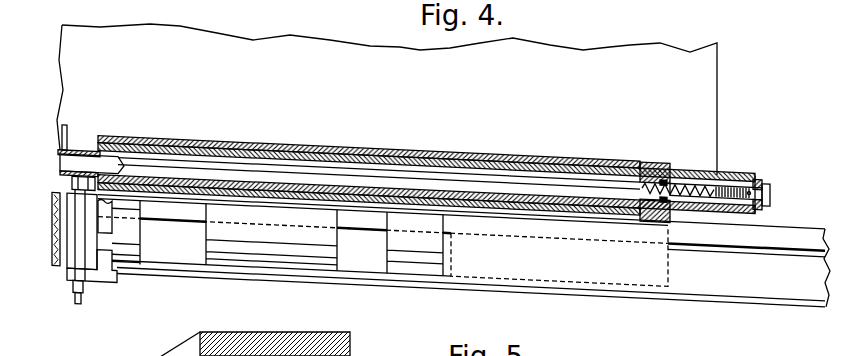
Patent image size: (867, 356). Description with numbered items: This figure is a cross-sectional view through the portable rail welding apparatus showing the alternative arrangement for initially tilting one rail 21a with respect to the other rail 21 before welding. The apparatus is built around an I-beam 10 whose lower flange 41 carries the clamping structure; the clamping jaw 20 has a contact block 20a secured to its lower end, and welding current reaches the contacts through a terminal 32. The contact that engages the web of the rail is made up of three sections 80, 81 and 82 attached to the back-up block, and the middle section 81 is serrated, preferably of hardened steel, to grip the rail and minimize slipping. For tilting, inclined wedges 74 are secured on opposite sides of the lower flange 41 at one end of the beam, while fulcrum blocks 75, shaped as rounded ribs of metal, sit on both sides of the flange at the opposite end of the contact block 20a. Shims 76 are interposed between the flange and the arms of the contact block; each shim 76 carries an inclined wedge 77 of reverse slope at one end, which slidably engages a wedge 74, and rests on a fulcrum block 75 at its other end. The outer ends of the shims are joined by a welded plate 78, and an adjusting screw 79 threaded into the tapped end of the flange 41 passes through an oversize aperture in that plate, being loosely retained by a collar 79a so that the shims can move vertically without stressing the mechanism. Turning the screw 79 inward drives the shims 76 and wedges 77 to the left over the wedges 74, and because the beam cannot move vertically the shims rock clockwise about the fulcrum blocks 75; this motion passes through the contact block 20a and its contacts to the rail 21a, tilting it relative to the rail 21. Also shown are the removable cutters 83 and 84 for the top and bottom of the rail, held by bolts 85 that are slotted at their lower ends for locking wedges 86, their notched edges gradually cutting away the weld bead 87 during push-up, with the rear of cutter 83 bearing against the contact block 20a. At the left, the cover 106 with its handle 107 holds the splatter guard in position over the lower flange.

The I-beam 10 is at (713, 97).
The contact block 20a is at (300, 147).
The lower flange 41 is at (543, 182).
The fulcrum block 75 is at (100, 166).
The shim 76 is at (397, 197).
The inclined wedge 77 is at (635, 170).
The inclined wedge 74 is at (651, 178).
The plate 78 is at (758, 178).
The adjusting screw 79 is at (727, 183).
The collar 79a is at (752, 212).
The rail 21a is at (763, 289).
The rail 21 is at (55, 267).
The terminal 32 is at (103, 213).
The contact section 80 is at (134, 233).
The contact section 81 is at (337, 242).
The contact section 82 is at (445, 250).
The cutter 83 is at (72, 193).
The cutter 84 is at (111, 275).
The bolt 85 is at (84, 293).
The locking wedge 86 is at (80, 303).
The bead 87 is at (61, 270).
The cover 106 is at (80, 148).
The handle 107 is at (66, 123).
The clamping jaw 20 is at (312, 350).